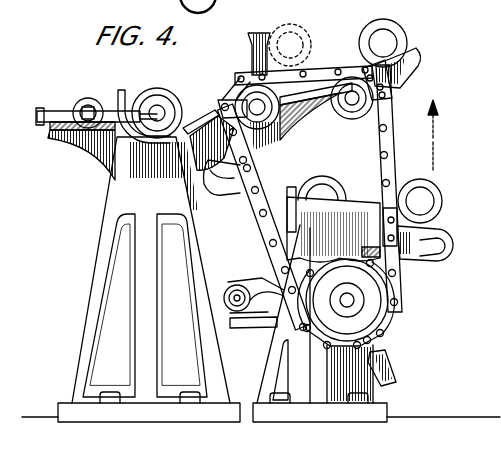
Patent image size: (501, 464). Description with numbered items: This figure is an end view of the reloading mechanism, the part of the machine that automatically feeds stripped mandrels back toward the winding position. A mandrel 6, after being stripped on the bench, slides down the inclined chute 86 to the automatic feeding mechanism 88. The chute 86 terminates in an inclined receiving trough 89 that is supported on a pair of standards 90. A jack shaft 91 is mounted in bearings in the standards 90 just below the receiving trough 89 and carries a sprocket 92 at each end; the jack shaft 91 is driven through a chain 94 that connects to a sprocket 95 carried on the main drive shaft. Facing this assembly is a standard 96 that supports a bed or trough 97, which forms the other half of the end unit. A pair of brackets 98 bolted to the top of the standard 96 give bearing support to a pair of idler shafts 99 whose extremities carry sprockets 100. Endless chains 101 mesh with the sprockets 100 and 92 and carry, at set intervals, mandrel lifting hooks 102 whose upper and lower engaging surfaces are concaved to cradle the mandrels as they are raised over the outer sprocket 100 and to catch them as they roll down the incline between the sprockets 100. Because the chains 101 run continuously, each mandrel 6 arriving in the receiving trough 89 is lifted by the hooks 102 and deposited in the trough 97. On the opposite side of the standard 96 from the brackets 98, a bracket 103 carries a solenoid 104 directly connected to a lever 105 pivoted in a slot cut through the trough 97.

The mandrel 6 is at (443, 199).
The inclined chute 86 is at (291, 190).
The automatic feeding mechanism 88 is at (432, 340).
The inclined receiving trough 89 is at (335, 204).
The standards 90 is at (308, 323).
The jack shaft 91 is at (340, 302).
The sprocket 92 is at (370, 320).
The chain 94 is at (245, 284).
The sprocket 95 is at (249, 335).
The standard 96 is at (128, 206).
The bed or trough 97 is at (144, 140).
The brackets 98 is at (295, 118).
The idler shafts 99 is at (248, 102).
The sprockets 100 is at (275, 97).
The endless chains 101 is at (386, 127).
The mandrel lifting hooks 102 is at (226, 196).
The bracket 103 is at (56, 140).
The solenoid 104 is at (89, 100).
The lever 105 is at (66, 107).